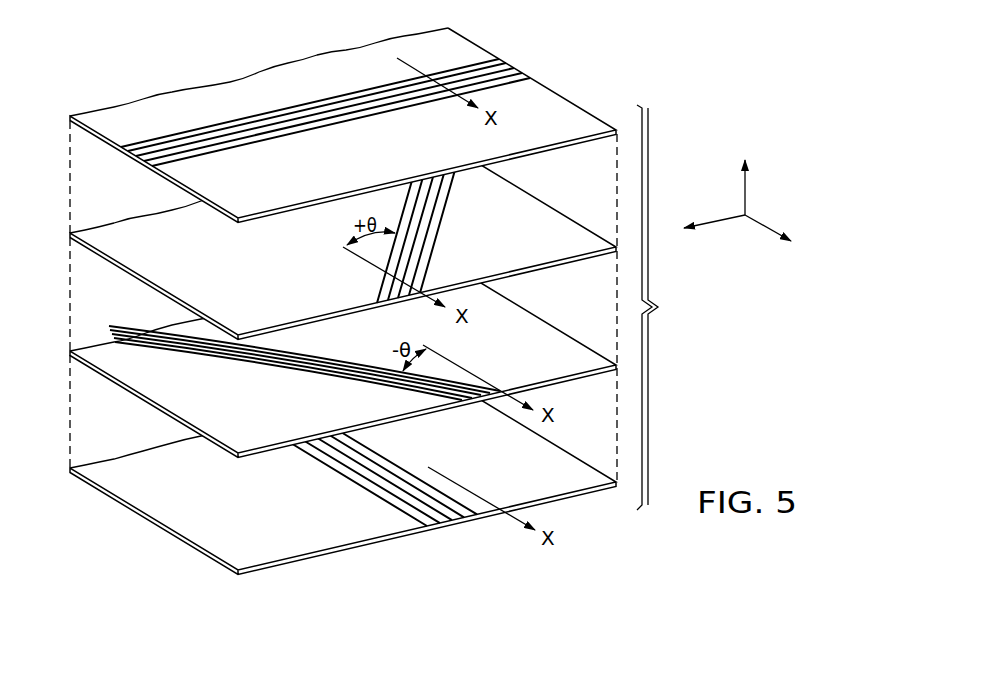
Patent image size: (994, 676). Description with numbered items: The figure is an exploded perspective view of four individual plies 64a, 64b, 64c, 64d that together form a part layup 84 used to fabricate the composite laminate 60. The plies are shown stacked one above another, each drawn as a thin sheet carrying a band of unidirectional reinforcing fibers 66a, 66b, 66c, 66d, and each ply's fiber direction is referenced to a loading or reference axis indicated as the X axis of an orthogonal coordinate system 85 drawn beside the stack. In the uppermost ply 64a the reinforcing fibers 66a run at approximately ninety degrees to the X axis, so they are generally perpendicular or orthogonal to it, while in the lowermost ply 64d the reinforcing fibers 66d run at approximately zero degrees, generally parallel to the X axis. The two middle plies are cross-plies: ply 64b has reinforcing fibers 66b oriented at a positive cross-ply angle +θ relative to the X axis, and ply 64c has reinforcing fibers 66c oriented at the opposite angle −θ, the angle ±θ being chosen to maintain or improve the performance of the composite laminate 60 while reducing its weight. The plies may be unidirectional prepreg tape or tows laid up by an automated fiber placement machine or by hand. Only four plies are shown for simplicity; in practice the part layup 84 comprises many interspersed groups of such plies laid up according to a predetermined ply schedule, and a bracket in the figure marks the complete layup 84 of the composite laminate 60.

The composite laminate 60 is at (118, 510).
The ply 64a is at (567, 110).
The ply 64b is at (567, 228).
The ply 64c is at (567, 347).
The ply 64d is at (567, 465).
The reinforcing fibers 66a is at (370, 116).
The reinforcing fibers 66b is at (442, 218).
The reinforcing fibers 66c is at (313, 374).
The reinforcing fibers 66d is at (358, 482).
The part layup 84 is at (662, 307).
The orthogonal coordinate system 85 is at (786, 186).